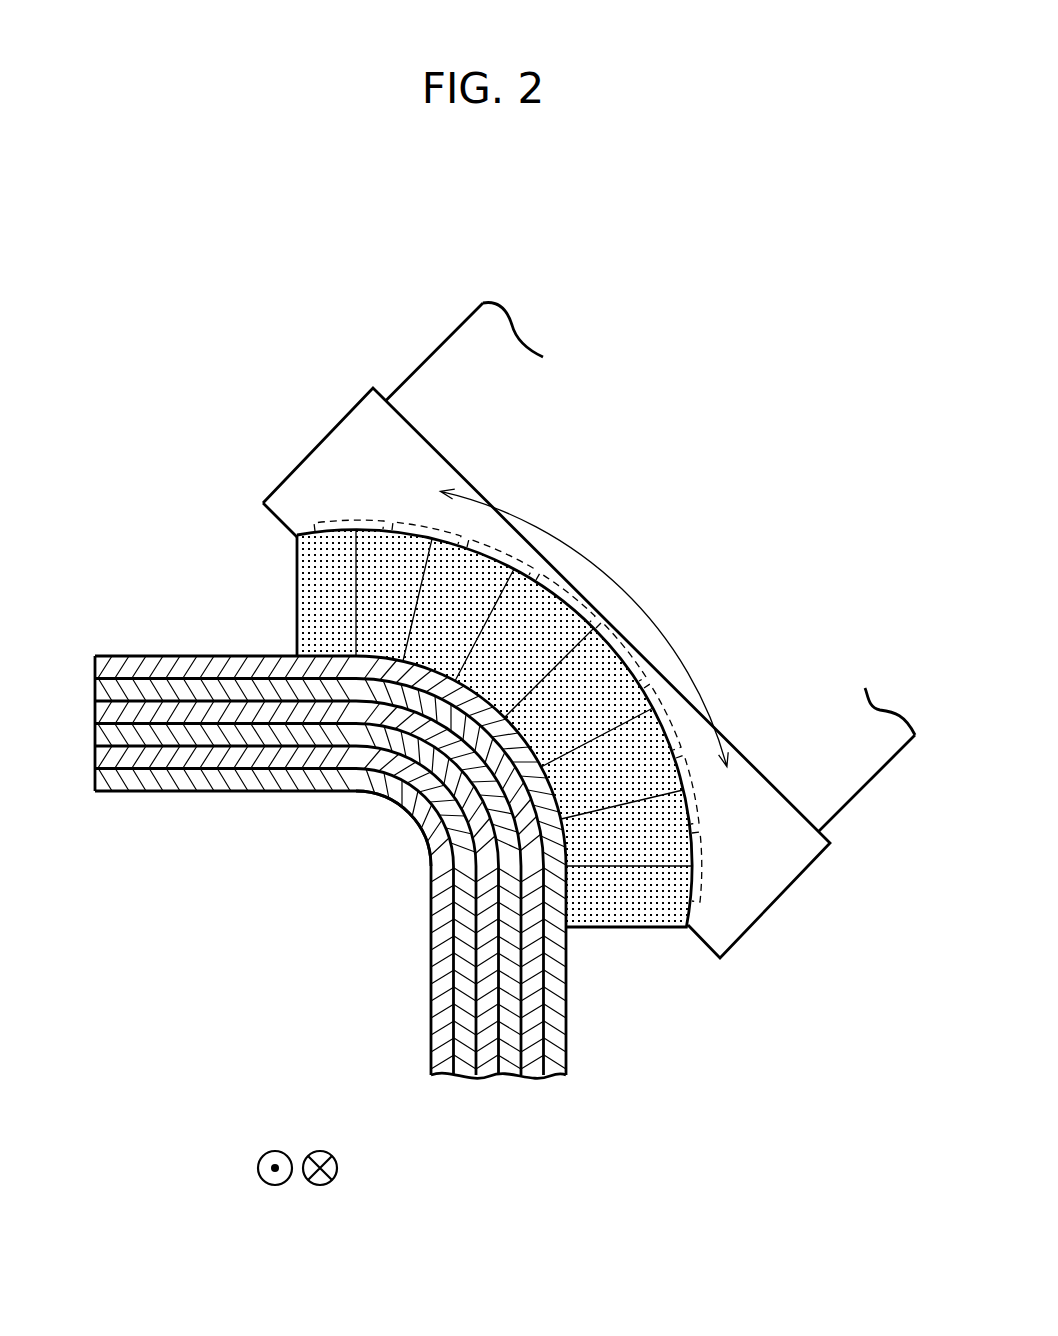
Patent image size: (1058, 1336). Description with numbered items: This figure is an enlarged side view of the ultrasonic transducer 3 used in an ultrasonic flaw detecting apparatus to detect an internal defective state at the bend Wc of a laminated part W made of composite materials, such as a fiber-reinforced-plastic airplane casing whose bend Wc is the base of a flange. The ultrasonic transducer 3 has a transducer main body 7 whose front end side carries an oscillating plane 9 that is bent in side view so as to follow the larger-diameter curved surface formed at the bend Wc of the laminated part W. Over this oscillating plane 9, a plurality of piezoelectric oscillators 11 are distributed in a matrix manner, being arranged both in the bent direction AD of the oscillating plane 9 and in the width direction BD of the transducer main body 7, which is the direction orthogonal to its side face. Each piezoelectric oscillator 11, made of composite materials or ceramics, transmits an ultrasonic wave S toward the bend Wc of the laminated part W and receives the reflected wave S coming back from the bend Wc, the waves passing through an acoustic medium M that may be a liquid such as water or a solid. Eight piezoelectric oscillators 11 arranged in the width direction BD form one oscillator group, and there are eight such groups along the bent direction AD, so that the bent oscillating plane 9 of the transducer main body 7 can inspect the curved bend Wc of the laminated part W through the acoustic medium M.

The ultrasonic transducer 3 is at (432, 292).
The transducer main body 7 is at (327, 437).
The oscillating plane 9 is at (300, 548).
The piezoelectric oscillator 11 is at (413, 518).
The laminated part W is at (203, 644).
The bend Wc is at (435, 820).
The acoustic medium M is at (663, 910).
The ultrasonic wave S is at (372, 587).
The bent direction AD is at (630, 590).
The width direction BD is at (297, 1150).